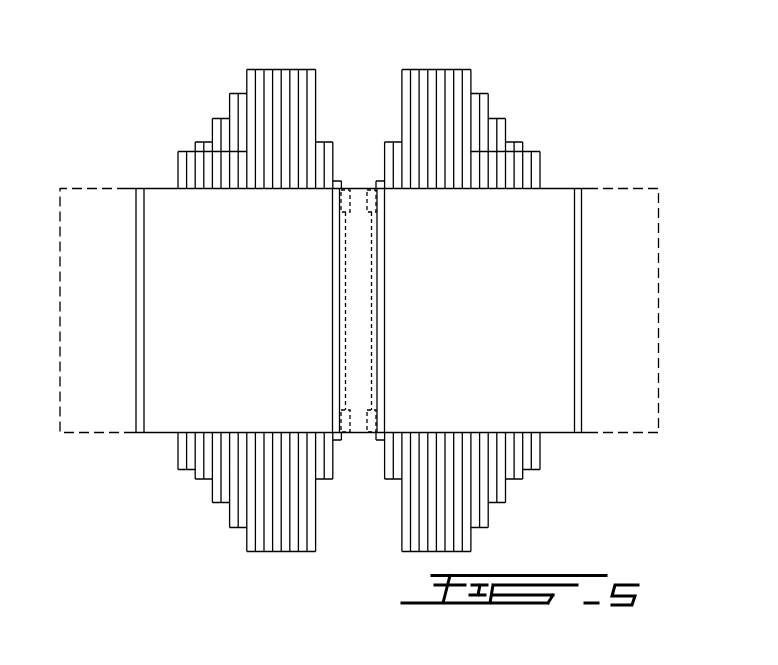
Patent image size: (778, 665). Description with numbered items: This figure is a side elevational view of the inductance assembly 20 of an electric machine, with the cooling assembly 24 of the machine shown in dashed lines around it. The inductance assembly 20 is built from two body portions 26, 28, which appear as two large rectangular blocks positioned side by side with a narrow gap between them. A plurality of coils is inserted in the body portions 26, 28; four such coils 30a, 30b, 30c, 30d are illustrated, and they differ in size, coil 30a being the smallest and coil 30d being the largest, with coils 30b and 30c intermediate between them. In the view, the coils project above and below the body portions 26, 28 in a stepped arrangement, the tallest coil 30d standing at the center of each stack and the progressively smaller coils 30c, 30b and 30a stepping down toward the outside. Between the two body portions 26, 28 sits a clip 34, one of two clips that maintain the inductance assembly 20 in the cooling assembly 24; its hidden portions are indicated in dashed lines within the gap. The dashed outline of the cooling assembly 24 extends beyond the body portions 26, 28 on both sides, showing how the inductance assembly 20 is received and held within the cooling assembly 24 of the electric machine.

The inductance assembly 20 is at (613, 130).
The cooling assembly 24 is at (644, 257).
The body portion 26 is at (181, 227).
The body portion 28 is at (553, 225).
The coil 30a is at (518, 146).
The coil 30b is at (500, 120).
The coil 30c is at (483, 97).
The coil 30d is at (455, 78).
The clip 34 is at (358, 213).